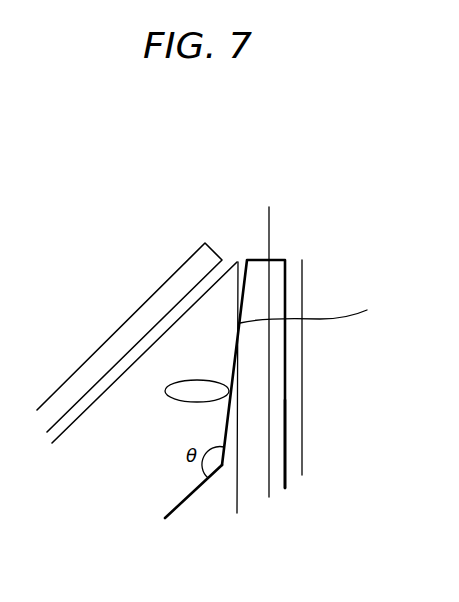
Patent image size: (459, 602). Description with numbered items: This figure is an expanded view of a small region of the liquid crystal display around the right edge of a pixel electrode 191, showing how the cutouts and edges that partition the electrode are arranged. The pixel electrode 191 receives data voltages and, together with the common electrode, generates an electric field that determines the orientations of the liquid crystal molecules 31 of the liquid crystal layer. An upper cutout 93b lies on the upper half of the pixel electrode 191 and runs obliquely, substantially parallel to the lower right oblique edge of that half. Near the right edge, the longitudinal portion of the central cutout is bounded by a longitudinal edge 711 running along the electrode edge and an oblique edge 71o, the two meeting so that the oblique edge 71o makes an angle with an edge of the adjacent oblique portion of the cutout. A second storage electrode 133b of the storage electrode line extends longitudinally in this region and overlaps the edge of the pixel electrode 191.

The upper cutout 93b is at (152, 293).
The liquid crystal molecules 31 is at (167, 387).
The pixel electrode 191 is at (269, 227).
The second storage electrode 133b is at (302, 285).
The oblique edge of the longitudinal portion 71o is at (232, 382).
The longitudinal edge of the longitudinal portion 711 is at (285, 442).